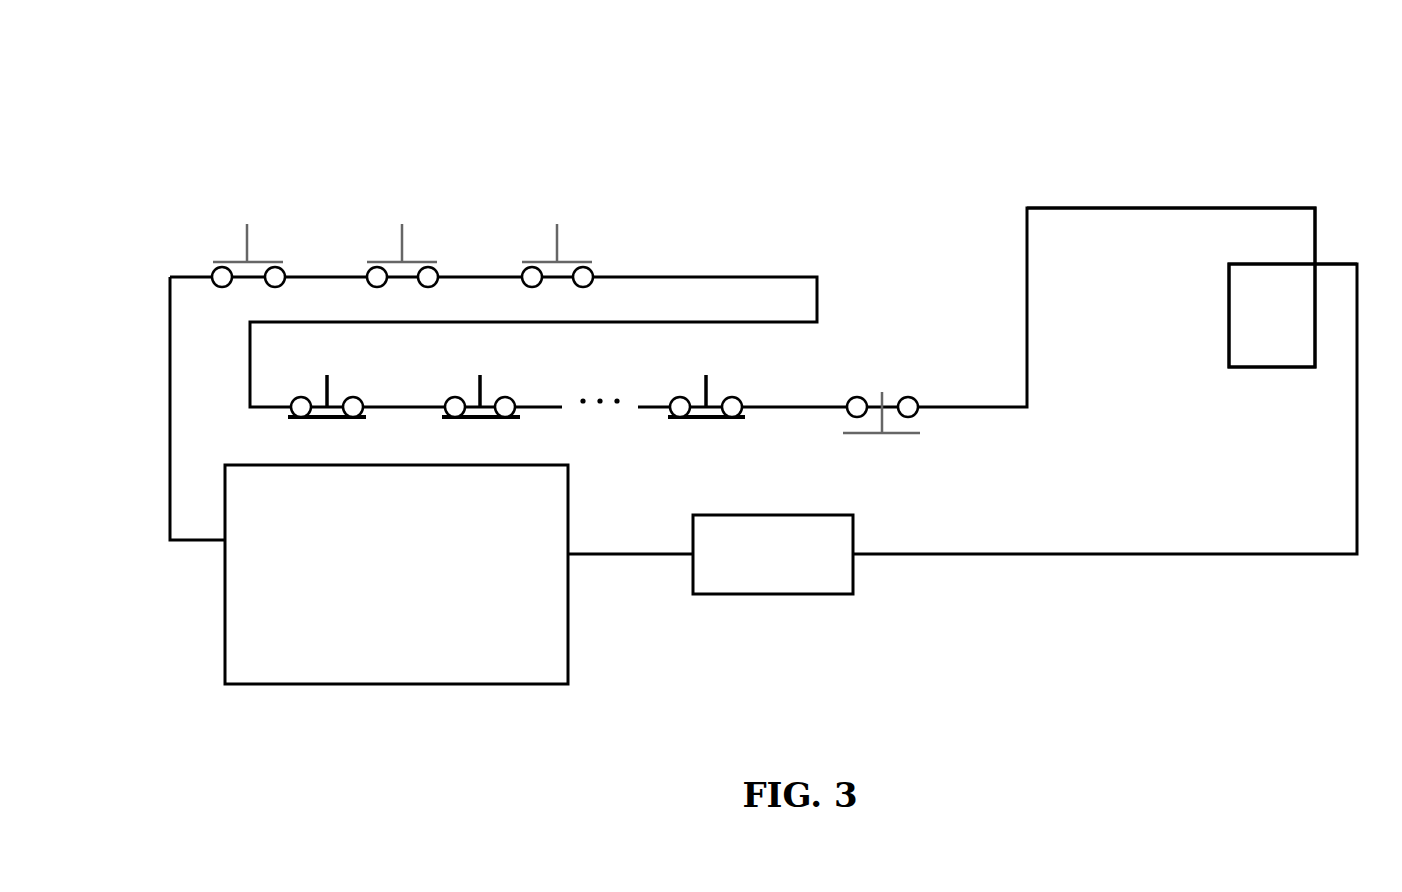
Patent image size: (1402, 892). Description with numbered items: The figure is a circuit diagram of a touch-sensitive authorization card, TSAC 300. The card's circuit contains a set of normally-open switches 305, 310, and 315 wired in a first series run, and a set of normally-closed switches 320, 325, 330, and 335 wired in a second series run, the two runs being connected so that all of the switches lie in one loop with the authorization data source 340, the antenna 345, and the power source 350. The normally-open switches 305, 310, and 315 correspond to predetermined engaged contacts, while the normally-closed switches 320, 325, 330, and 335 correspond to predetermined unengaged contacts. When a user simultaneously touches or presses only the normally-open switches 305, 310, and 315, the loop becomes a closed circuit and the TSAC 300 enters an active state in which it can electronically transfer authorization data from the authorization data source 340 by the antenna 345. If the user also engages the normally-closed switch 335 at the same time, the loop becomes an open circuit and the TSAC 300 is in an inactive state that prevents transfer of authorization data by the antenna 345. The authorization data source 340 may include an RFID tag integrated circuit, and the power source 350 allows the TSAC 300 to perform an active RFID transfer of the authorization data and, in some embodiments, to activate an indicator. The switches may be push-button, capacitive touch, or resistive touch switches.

The TSAC 300 is at (230, 110).
The normally-open switch 305 is at (229, 214).
The normally-open switch 310 is at (394, 212).
The normally-open switch 315 is at (561, 202).
The normally-closed switch 320 is at (343, 371).
The normally-closed switch 325 is at (494, 371).
The normally-closed switch 330 is at (726, 369).
The normally-closed switch 335 is at (884, 369).
The authorization data source 340 is at (376, 603).
The antenna 345 is at (1342, 240).
The power source 350 is at (753, 580).